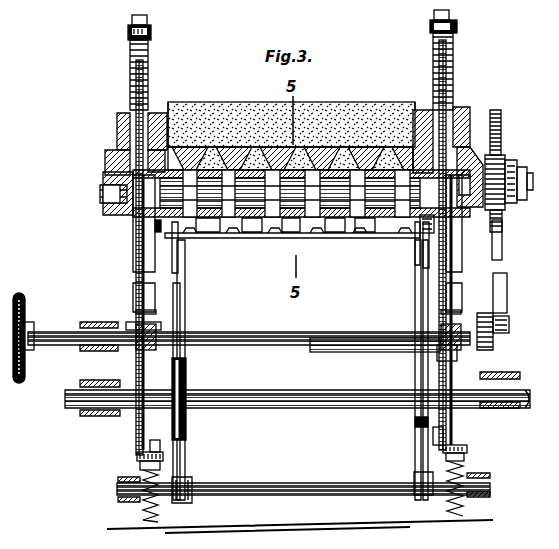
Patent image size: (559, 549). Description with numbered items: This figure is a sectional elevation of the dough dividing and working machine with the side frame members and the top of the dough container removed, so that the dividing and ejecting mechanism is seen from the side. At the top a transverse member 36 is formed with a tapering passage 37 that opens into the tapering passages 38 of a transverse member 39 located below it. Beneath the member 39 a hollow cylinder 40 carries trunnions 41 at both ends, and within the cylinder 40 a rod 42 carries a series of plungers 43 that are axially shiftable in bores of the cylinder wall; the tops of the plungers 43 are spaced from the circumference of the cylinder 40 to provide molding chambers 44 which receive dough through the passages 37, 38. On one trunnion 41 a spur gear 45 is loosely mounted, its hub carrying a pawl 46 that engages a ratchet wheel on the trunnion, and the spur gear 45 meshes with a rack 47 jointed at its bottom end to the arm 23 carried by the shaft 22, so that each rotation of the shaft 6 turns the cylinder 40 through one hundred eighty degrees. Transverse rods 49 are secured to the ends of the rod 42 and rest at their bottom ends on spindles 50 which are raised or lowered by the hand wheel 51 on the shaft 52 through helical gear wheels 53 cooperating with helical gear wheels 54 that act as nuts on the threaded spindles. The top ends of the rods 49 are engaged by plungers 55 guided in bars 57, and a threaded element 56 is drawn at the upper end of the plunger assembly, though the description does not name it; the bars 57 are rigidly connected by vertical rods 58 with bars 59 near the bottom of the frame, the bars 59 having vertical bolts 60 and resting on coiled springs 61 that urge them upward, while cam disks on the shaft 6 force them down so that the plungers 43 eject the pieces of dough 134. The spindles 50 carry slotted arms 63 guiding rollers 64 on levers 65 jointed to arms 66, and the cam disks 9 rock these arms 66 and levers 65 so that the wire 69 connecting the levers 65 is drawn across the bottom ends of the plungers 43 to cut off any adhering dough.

The bars 57 is at (152, 33).
The threaded screw 56 is at (148, 60).
The vertical rods 58 is at (135, 80).
The plungers 55 is at (150, 115).
The transverse member 36 is at (462, 110).
The transverse member 39 is at (478, 162).
The rack 47 is at (501, 122).
The spur gear 45 is at (505, 212).
The pawl 46 is at (533, 160).
The tapering passage 37 is at (398, 110).
The tapering passages 38 is at (340, 150).
The trunnions 41 is at (100, 194).
The transverse rods 49 is at (155, 225).
The pieces of dough 134 is at (225, 238).
The rod 42 is at (210, 238).
The hollow cylinder 40 is at (252, 238).
The molding chambers 44 is at (288, 238).
The wire 69 is at (335, 238).
The plungers 43 is at (365, 238).
The spindles 50 is at (133, 266).
The helical gear wheels 53 is at (155, 337).
The longitudinally slotted arms 63 is at (176, 260).
The levers 65 is at (415, 235).
The rollers 64 is at (434, 224).
The hand wheel 51 is at (18, 296).
The shaft 52 is at (60, 333).
The arm 23 is at (493, 340).
The shaft 22 is at (400, 352).
The helical gear wheels 54 is at (445, 352).
The shaft 6 is at (360, 404).
The arms 66 is at (185, 450).
The cam disks 9 is at (186, 425).
The bars 59 is at (137, 458).
The vertical bolts 60 is at (158, 500).
The coiled springs 61 is at (143, 506).